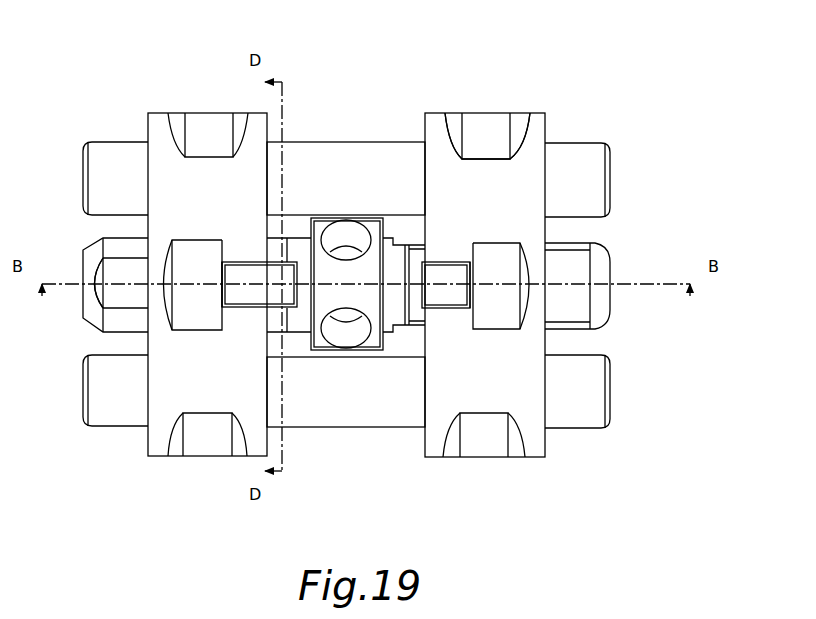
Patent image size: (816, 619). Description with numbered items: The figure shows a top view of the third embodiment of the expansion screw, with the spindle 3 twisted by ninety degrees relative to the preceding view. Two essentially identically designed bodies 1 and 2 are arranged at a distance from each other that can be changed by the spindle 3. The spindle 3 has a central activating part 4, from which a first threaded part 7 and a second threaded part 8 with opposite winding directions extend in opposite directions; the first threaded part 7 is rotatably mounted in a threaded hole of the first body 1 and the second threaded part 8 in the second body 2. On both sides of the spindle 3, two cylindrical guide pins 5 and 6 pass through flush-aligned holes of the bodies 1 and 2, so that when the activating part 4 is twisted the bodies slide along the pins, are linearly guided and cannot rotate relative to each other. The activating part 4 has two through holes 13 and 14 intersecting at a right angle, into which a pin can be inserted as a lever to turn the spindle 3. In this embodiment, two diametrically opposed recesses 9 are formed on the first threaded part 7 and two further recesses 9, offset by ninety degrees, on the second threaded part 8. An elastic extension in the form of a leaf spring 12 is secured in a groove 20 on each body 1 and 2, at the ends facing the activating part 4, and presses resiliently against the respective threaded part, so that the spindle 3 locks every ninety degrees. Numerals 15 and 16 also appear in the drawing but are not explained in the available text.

The first body 1 is at (165, 130).
The second body 2 is at (533, 122).
The spindle 3 is at (557, 307).
The activating part 4 is at (323, 303).
The guide pin 5 is at (595, 150).
The guide pin 6 is at (590, 410).
The first threaded part 7 is at (87, 260).
The second threaded part 8 is at (597, 268).
The recess 9 is at (115, 290).
The leaf spring 12 is at (247, 270).
The through hole 13 is at (346, 237).
The through hole 14 is at (357, 335).
The ball element 15 is at (503, 303).
The recess 16 is at (483, 125).
The groove 20 is at (227, 296).